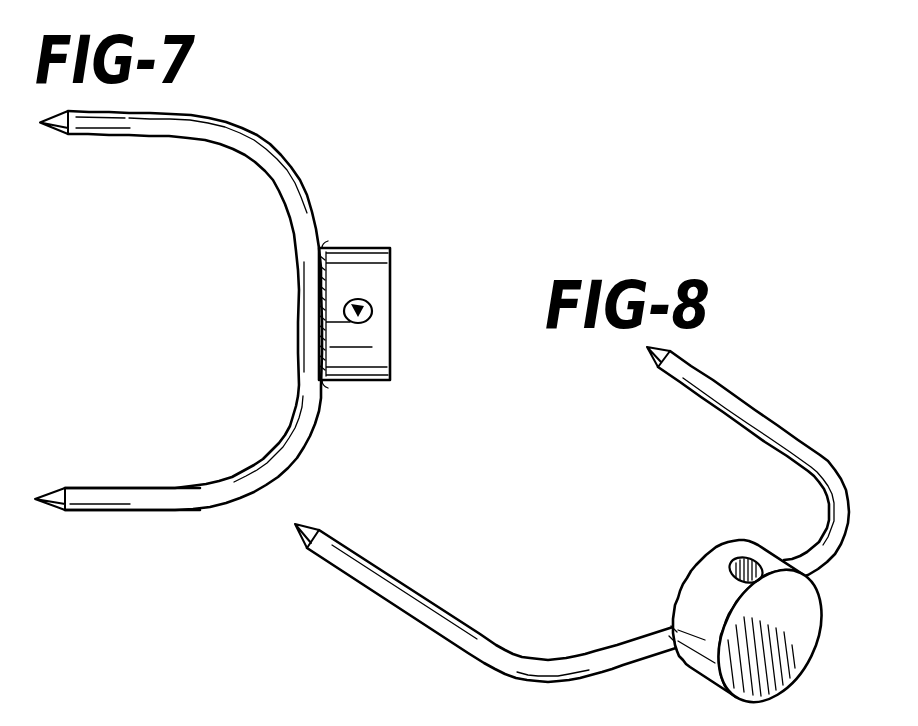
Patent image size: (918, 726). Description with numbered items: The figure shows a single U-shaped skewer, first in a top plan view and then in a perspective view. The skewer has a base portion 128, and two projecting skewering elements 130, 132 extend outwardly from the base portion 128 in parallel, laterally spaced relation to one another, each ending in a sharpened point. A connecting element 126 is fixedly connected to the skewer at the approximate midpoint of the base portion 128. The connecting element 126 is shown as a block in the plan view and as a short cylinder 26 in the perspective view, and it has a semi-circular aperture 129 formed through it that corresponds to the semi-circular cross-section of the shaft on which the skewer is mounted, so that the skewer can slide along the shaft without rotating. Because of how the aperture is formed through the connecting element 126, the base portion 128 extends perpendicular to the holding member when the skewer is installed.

In FIG. 8, the cylindrical base member 26 is at (784, 634).
In FIG. 7, the connecting element 126 is at (376, 357).
In FIG. 7, the base portion 128 is at (317, 387).
In FIG. 8, the base portion 128 is at (651, 636).
In FIG. 7, the hole 129 is at (358, 311).
In FIG. 8, the hole 129 is at (742, 566).
In FIG. 7, the skewering element 130 is at (110, 495).
In FIG. 8, the skewering element 130 is at (392, 583).
In FIG. 7, the skewering element 132 is at (130, 122).
In FIG. 8, the skewering element 132 is at (716, 395).